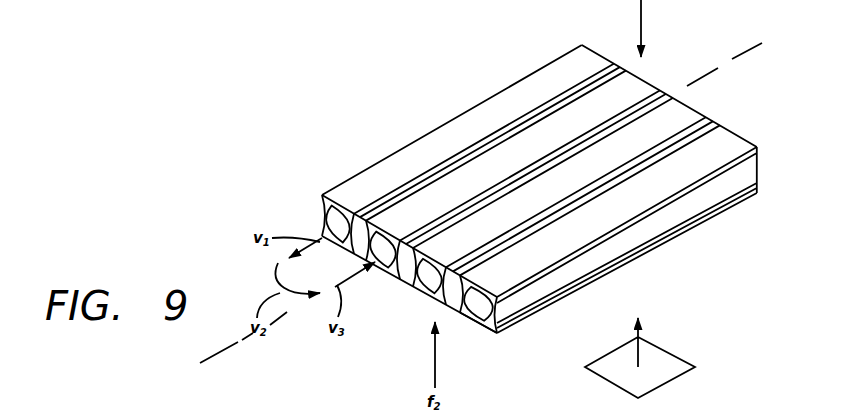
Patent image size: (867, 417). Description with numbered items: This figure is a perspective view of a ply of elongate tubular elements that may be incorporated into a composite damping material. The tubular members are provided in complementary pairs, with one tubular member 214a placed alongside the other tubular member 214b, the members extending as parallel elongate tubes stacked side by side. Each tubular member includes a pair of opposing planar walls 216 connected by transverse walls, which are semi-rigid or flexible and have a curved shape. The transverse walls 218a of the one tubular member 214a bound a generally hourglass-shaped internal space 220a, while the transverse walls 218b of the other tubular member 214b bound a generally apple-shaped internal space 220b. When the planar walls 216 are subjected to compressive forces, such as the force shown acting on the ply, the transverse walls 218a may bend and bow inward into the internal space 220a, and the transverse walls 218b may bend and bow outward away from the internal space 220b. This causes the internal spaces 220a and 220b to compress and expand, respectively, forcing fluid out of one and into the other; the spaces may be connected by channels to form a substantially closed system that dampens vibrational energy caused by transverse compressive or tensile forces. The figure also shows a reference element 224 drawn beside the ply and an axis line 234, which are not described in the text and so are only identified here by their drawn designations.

The planar walls 216 is at (422, 158).
The tubular member 214a is at (322, 208).
The tubular member 214b is at (364, 222).
The transverse walls 218a is at (458, 312).
The transverse walls 218b is at (500, 335).
The internal space 220a is at (330, 229).
The internal space 220b is at (381, 258).
The reference plane 224 is at (642, 355).
The axis line 234 is at (725, 63).